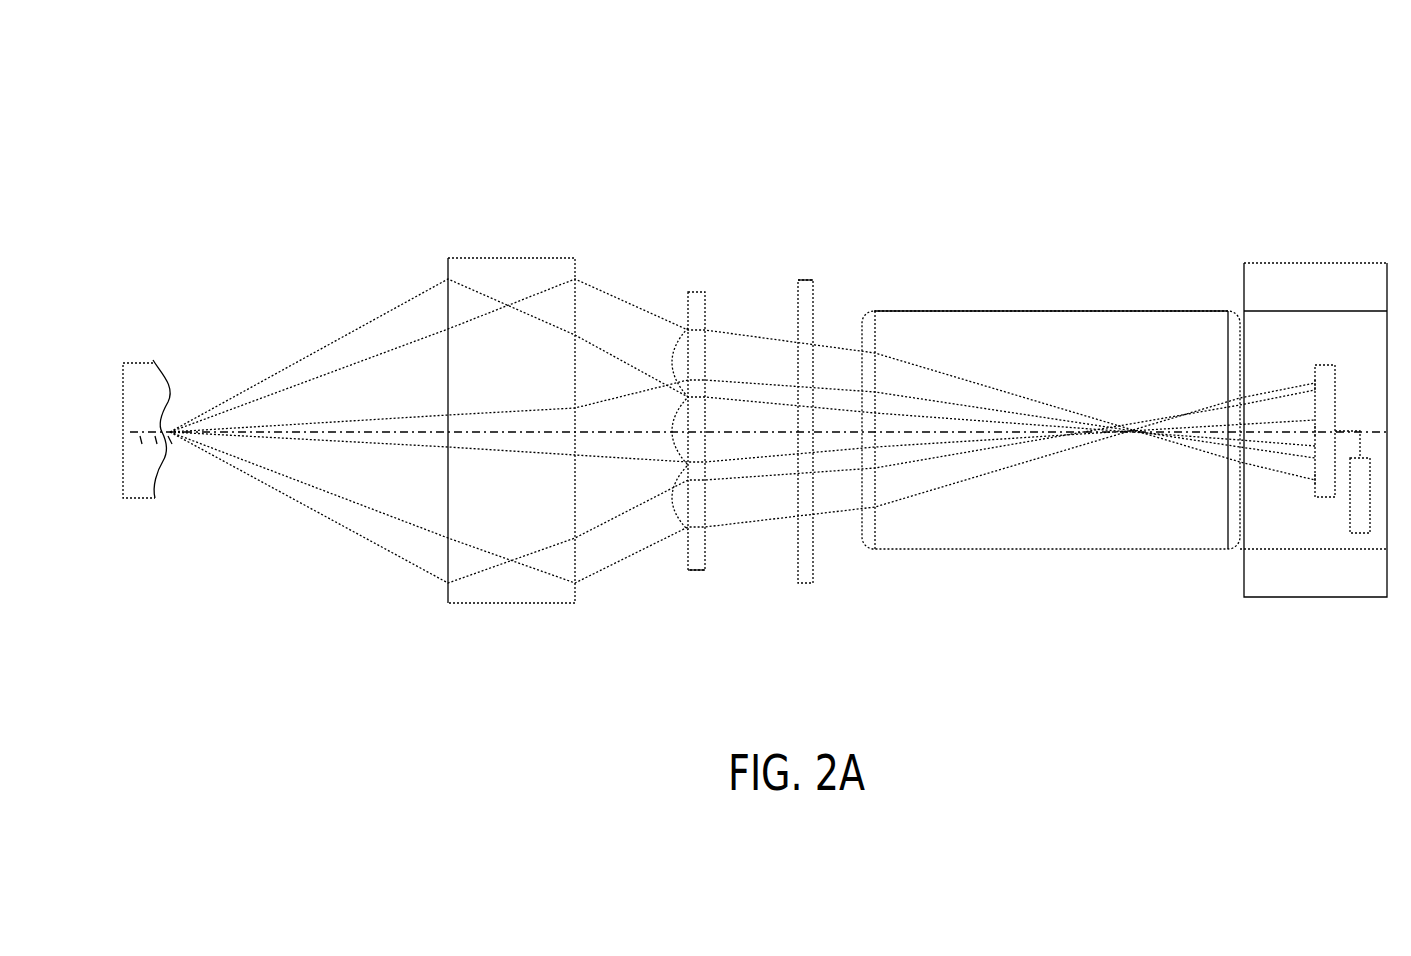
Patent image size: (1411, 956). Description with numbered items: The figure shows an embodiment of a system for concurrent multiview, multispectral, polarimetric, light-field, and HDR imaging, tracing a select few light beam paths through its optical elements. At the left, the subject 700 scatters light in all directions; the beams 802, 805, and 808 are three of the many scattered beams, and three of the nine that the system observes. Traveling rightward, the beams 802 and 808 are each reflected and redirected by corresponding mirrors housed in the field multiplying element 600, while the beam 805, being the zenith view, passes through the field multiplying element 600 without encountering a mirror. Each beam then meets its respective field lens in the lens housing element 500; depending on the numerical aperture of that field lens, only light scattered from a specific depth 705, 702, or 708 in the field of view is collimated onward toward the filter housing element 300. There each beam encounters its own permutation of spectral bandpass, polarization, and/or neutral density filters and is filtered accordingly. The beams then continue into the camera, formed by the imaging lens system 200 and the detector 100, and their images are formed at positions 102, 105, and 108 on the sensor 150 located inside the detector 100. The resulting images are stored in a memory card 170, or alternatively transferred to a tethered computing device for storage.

The detector 100 is at (1312, 285).
The image position 102 is at (1314, 480).
The image position 105 is at (1315, 436).
The image position 108 is at (1316, 386).
The sensor 150 is at (1320, 362).
The memory card 170 is at (1369, 518).
The imaging lens system 200 is at (1046, 335).
The filter housing element 300 is at (808, 283).
The lens housing element 500 is at (697, 300).
The field multiplying element 600 is at (502, 282).
The subject 700 is at (142, 368).
The depth 702 is at (156, 438).
The depth 705 is at (171, 438).
The depth 708 is at (141, 438).
The beam 802 is at (300, 363).
The beam 805 is at (370, 418).
The beam 808 is at (372, 518).